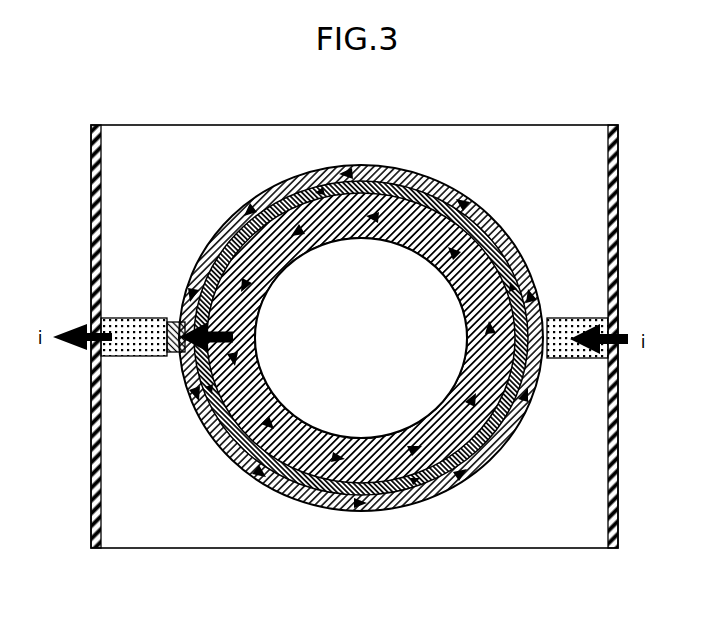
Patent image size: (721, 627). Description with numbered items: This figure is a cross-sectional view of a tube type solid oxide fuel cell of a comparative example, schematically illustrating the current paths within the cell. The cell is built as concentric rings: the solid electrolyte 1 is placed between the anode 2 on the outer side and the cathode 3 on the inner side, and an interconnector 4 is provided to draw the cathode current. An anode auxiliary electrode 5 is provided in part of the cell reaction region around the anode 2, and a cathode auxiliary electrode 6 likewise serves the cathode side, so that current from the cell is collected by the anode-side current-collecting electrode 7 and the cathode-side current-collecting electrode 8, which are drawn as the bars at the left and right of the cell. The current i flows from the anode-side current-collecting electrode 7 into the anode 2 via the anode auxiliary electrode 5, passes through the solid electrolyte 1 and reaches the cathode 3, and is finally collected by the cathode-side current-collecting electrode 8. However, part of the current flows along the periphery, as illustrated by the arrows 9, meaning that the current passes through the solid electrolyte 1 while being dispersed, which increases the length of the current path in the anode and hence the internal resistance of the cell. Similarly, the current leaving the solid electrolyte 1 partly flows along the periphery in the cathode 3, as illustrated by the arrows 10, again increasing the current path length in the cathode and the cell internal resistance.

The solid electrolyte 1 is at (319, 172).
The anode 2 is at (423, 177).
The cathode 3 is at (264, 196).
The interconnector 4 is at (172, 322).
The anode auxiliary electrode 5 is at (565, 357).
The cathode auxiliary electrode 6 is at (130, 350).
The anode-side current-collecting electrode 7 is at (609, 450).
The cathode-side current-collecting electrode 8 is at (92, 422).
The arrows 9 is at (466, 199).
The arrows 10 is at (462, 305).